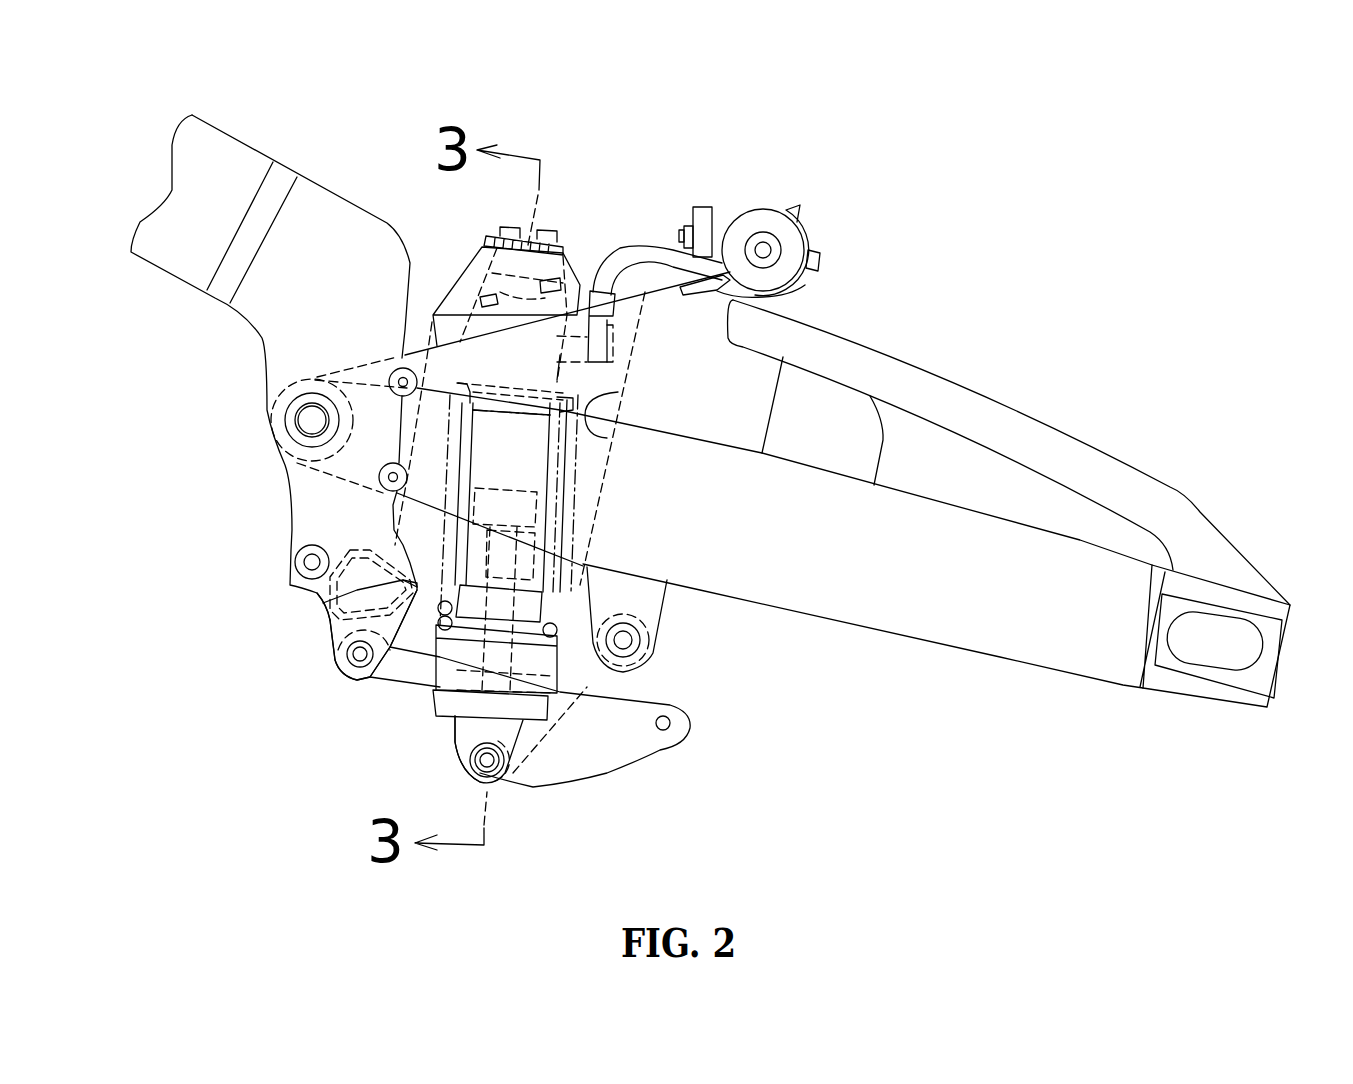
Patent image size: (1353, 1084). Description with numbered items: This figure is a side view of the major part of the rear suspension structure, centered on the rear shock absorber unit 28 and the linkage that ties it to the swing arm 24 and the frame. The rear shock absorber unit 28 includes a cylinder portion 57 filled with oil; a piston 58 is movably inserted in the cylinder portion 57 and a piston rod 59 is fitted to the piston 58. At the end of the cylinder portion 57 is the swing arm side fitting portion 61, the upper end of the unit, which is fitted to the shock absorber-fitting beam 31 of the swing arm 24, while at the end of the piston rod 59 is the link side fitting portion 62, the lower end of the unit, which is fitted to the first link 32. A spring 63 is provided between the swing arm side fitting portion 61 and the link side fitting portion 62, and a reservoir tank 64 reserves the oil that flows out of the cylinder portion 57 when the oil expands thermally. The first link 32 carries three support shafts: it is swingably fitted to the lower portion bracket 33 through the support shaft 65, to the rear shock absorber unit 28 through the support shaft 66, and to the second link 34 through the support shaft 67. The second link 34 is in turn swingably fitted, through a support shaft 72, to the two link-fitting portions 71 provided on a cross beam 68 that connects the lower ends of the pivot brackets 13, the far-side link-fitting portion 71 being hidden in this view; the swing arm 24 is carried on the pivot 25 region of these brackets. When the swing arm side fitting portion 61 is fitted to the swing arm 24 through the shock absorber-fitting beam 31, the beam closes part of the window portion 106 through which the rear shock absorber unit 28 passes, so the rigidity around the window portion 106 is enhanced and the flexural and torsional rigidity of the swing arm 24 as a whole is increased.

The pivot bracket 13 is at (263, 343).
The swing arm 24 is at (990, 372).
The pivot shaft 25 is at (272, 413).
The rear shock absorber unit 28 is at (559, 222).
The shock absorber-fitting beam 31 is at (470, 258).
The first link 32 is at (640, 773).
The lower portion bracket 33 is at (667, 613).
The second link 34 is at (397, 683).
The cylinder portion 57 is at (550, 450).
The piston 58 is at (525, 488).
The piston rod 59 is at (517, 567).
The swing arm side fitting portion 61 is at (580, 265).
The link side fitting portion 62 is at (455, 740).
The spring 63 is at (330, 603).
The reservoir tank 64 is at (772, 206).
The support shaft 65 is at (640, 658).
The support shaft 66 is at (500, 767).
The support shaft 67 is at (673, 723).
The cross beam 68 is at (327, 607).
The link-fitting portion 71 is at (323, 603).
The support shaft 72 is at (343, 660).
The window portion 106 is at (618, 392).